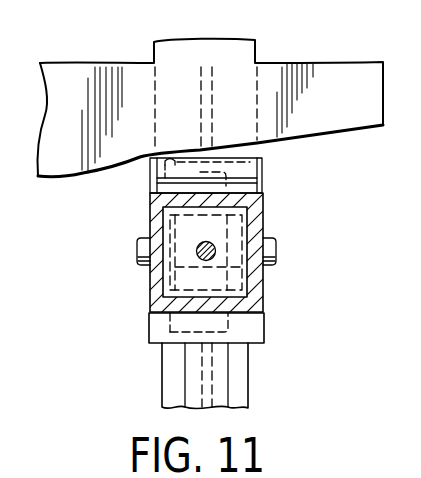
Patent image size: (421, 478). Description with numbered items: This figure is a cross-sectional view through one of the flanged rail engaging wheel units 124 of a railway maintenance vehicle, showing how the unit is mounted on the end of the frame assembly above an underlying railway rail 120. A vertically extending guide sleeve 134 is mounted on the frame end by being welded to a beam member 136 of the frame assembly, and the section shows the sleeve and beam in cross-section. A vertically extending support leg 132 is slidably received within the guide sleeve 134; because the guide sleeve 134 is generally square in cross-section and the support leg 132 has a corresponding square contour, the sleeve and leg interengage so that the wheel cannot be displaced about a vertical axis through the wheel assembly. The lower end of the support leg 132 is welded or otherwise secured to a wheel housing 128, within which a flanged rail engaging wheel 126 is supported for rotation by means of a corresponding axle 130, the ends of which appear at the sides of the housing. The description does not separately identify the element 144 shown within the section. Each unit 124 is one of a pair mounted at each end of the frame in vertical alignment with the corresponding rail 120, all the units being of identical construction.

The beam member 136 is at (243, 52).
The flanged rail engaging wheel unit 124 is at (148, 275).
The guide sleeve 134 is at (262, 292).
The support leg 132 is at (235, 225).
The pin 144 is at (197, 243).
The axle 130 is at (276, 247).
The wheel housing 128 is at (265, 327).
The flanged rail engaging wheel 126 is at (156, 330).
The railway rail 120 is at (249, 382).